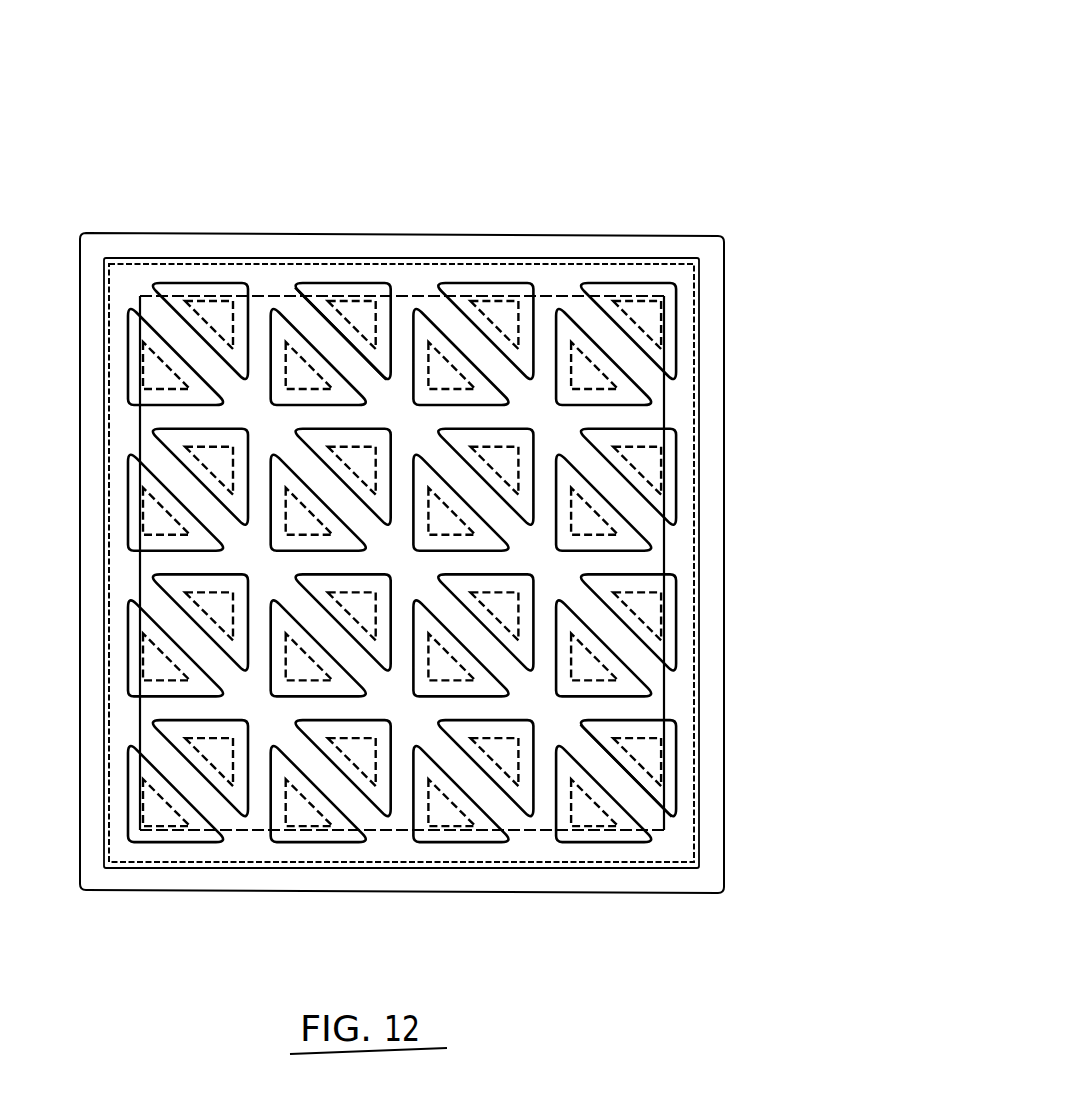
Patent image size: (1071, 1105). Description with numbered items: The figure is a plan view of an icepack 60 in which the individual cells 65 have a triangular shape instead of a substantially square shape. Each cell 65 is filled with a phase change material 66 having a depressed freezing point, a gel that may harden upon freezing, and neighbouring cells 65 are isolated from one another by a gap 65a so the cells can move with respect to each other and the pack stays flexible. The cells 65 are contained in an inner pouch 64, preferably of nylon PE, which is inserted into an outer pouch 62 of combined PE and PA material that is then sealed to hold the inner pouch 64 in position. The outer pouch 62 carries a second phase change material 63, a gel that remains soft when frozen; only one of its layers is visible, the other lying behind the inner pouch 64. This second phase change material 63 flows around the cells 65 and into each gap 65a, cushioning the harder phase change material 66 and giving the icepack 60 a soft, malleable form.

The icepack 60 is at (449, 482).
The outer pouch 62 is at (688, 236).
The second phase change material 63 is at (665, 408).
The inner pouch 64 is at (695, 303).
The individual cells 65 is at (367, 283).
The gap 65a is at (303, 320).
The phase change material 66 is at (637, 543).